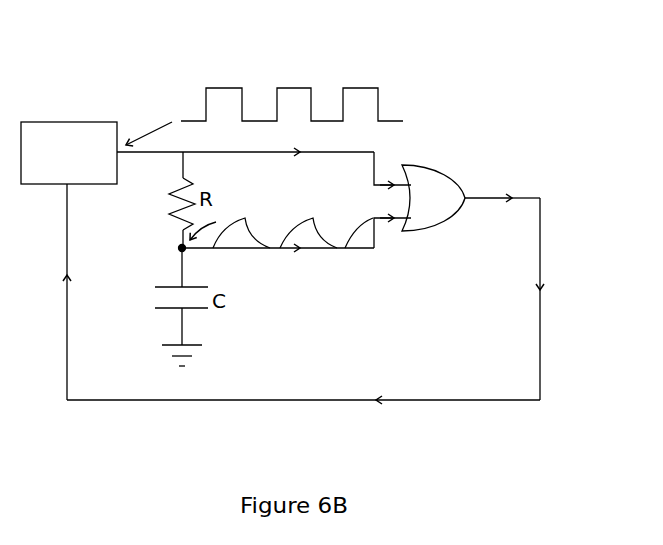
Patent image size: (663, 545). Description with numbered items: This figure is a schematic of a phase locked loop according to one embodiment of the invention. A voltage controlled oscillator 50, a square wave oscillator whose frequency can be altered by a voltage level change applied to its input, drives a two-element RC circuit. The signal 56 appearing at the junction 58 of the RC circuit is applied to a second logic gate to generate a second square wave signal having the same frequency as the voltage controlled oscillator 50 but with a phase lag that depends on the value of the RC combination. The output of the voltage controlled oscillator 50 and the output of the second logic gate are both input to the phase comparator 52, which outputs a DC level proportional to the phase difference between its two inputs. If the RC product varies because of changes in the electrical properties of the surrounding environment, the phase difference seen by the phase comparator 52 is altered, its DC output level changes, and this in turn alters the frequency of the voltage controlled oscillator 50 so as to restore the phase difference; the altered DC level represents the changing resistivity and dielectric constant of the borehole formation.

The voltage controlled oscillator 50 is at (103, 131).
The phase comparator 52 is at (448, 183).
The signal 56 is at (256, 223).
The junction 58 is at (172, 255).